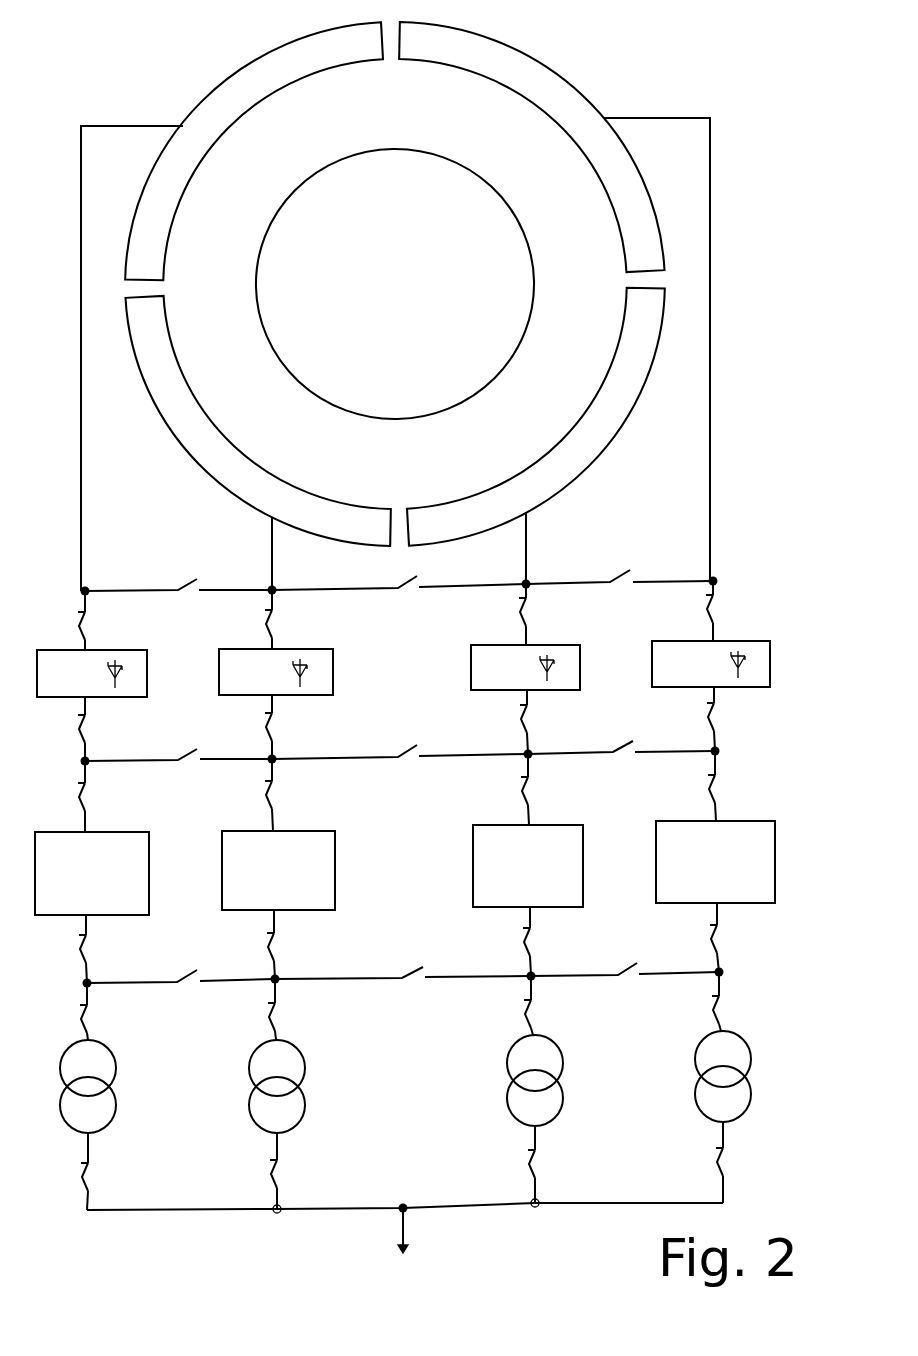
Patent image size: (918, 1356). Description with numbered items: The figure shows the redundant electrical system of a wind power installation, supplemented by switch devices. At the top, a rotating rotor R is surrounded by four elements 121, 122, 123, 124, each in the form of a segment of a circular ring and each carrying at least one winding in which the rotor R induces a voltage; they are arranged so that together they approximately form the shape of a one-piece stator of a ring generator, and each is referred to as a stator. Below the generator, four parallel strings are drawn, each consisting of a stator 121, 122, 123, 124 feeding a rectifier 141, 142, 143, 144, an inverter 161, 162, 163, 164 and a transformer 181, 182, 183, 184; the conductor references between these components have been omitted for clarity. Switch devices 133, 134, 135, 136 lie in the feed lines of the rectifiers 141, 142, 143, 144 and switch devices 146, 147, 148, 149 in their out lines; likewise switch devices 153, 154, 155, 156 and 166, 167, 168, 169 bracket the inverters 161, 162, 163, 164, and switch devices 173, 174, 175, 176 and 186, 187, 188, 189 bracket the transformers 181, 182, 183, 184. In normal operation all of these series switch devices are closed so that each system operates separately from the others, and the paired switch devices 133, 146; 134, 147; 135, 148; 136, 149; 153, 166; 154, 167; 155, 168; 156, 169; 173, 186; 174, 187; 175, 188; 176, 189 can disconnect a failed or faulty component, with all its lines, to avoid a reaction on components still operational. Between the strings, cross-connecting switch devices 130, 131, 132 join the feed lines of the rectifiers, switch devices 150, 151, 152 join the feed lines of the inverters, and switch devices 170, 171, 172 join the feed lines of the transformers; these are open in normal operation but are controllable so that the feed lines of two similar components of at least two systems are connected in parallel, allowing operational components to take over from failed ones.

The rotor R is at (395, 284).
The stator 121 is at (254, 151).
The stator 122 is at (258, 421).
The stator 123 is at (536, 416).
The stator 124 is at (532, 146).
The switch device 130 is at (195, 580).
The switch device 131 is at (407, 589).
The switch device 132 is at (626, 576).
The switch device 133 is at (85, 616).
The switch device 134 is at (272, 615).
The switch device 135 is at (526, 601).
The switch device 136 is at (713, 598).
The rectifier 141 is at (92, 673).
The rectifier 142 is at (276, 672).
The rectifier 143 is at (525, 667).
The rectifier 144 is at (711, 664).
The switch device 146 is at (85, 721).
The switch device 147 is at (272, 719).
The switch device 148 is at (527, 708).
The switch device 149 is at (714, 706).
The switch device 150 is at (191, 757).
The switch device 151 is at (406, 757).
The switch device 152 is at (628, 749).
The switch device 153 is at (85, 789).
The switch device 154 is at (272, 787).
The switch device 155 is at (528, 780).
The switch device 156 is at (715, 778).
The inverter 161 is at (108, 891).
The inverter 162 is at (300, 889).
The inverter 163 is at (552, 884).
The inverter 164 is at (738, 880).
The switch device 166 is at (86, 941).
The switch device 167 is at (274, 939).
The switch device 168 is at (530, 931).
The switch device 169 is at (717, 929).
The switch device 170 is at (195, 978).
The switch device 171 is at (409, 979).
The switch device 172 is at (630, 970).
The switch device 173 is at (87, 1011).
The switch device 174 is at (275, 1009).
The switch device 175 is at (531, 1003).
The switch device 176 is at (719, 999).
The transformer 181 is at (104, 1076).
The transformer 182 is at (296, 1070).
The transformer 183 is at (520, 1070).
The transformer 184 is at (708, 1067).
The switch device 186 is at (88, 1169).
The switch device 187 is at (277, 1166).
The switch device 188 is at (535, 1153).
The switch device 189 is at (723, 1151).